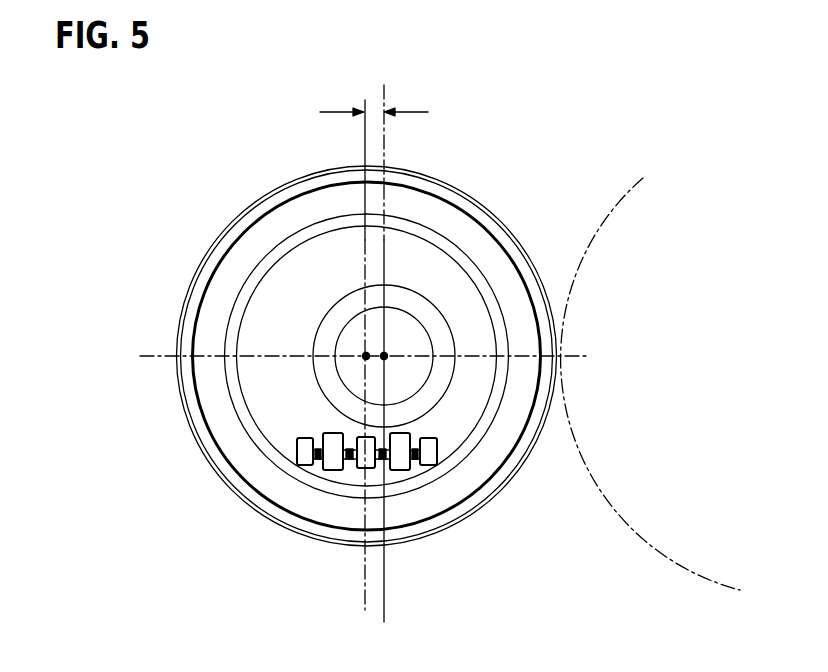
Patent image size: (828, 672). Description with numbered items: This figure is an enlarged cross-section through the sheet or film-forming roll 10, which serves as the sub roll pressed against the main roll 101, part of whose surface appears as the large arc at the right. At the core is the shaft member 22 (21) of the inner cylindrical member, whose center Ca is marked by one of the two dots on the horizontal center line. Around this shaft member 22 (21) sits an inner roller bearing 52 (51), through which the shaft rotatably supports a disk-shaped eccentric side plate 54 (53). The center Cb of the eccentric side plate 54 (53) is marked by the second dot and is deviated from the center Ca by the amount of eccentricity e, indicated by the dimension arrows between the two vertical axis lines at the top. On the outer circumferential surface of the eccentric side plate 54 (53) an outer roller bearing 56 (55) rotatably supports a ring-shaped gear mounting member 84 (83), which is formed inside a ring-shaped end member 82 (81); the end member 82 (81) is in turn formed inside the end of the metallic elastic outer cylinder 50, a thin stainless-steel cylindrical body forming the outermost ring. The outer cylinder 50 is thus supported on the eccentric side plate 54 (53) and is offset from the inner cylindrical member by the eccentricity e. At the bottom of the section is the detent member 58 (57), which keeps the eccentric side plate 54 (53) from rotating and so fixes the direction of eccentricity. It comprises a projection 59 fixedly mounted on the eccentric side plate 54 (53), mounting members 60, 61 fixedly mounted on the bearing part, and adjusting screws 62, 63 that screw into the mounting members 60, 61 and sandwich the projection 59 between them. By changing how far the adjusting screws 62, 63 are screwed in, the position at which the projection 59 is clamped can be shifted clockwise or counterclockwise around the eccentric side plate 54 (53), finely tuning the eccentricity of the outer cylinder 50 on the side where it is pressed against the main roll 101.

The sheet or film-forming roll 10 is at (153, 217).
The metallic elastic outer cylinder 50 is at (447, 188).
The shaft member 22 is at (417, 335).
The shaft member 21 is at (384, 356).
The inner roller bearing 52 is at (447, 345).
The inner roller bearing 51 is at (384, 356).
The eccentric side plate 54 is at (483, 382).
The eccentric side plate 53 is at (367, 356).
The outer roller bearing 56 is at (483, 422).
The outer roller bearing 55 is at (367, 356).
The end member 82 is at (190, 310).
The end member 81 is at (367, 356).
The gear mounting member 84 is at (237, 448).
The gear mounting member 83 is at (277, 483).
The detent member 58 is at (346, 482).
The detent member 57 is at (366, 452).
The projection 59 is at (372, 468).
The mounting member 60 is at (327, 462).
The mounting member 61 is at (400, 468).
The adjusting screw 62 is at (302, 452).
The adjusting screw 63 is at (440, 450).
The main roll 101 is at (634, 556).
The center of the inner cylindrical member Ca is at (386, 352).
The center of the eccentric side plate Cb is at (364, 358).
The amount of eccentricity e is at (372, 110).